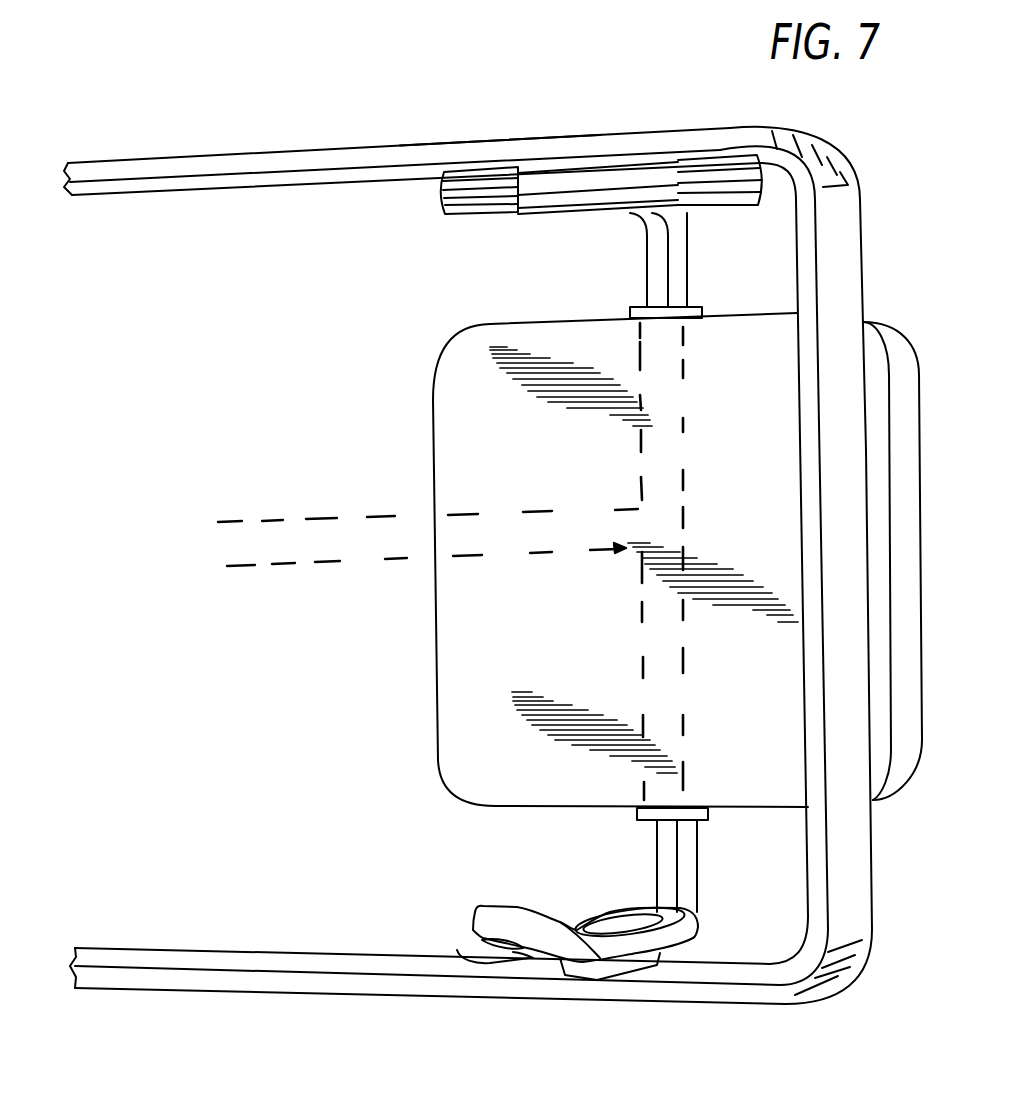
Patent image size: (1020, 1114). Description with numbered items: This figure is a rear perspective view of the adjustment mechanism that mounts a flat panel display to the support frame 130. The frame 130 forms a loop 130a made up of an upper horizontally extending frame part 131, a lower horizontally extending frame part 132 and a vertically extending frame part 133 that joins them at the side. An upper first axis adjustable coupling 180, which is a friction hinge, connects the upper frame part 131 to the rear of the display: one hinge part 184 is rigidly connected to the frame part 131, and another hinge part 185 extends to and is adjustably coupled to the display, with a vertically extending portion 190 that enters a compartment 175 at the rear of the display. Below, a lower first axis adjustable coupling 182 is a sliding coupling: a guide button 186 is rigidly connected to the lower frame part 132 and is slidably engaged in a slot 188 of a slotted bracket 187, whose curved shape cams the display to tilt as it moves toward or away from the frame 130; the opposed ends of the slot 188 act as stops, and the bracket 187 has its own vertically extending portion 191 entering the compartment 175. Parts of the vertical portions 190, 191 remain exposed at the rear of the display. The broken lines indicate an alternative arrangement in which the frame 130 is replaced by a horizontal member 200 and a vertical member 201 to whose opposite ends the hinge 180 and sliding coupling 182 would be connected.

The frame 130 is at (501, 531).
The loop 130a is at (522, 143).
The upper horizontally extending frame part 131 is at (340, 148).
The lower horizontally extending frame part 132 is at (295, 956).
The vertically extending frame part 133 is at (847, 278).
The compartment 175 is at (448, 637).
The upper first axis adjustable coupling 180 is at (571, 233).
The hinge part 184 is at (462, 208).
The hinge part 185 is at (606, 212).
The vertically extending portion 190 is at (677, 284).
The vertically extending portion 191 is at (690, 851).
The lower first axis adjustable coupling 182 is at (543, 895).
The guide button 186 is at (620, 920).
The slotted bracket 187 is at (517, 910).
The slot 188 is at (478, 958).
The horizontal member 200 is at (300, 569).
The vertical member 201 is at (684, 438).